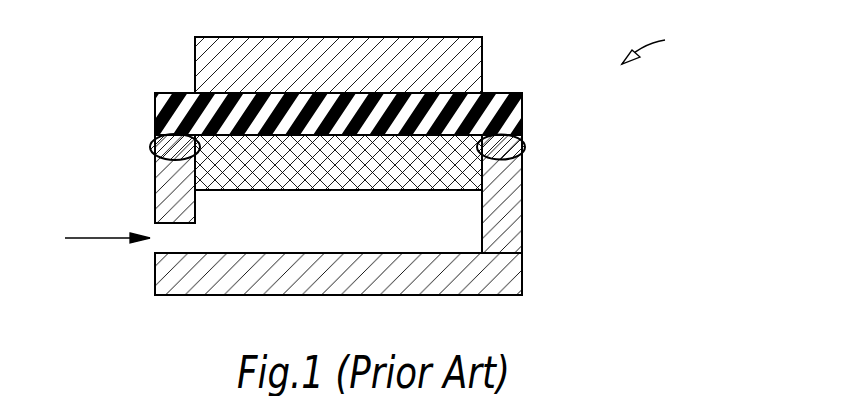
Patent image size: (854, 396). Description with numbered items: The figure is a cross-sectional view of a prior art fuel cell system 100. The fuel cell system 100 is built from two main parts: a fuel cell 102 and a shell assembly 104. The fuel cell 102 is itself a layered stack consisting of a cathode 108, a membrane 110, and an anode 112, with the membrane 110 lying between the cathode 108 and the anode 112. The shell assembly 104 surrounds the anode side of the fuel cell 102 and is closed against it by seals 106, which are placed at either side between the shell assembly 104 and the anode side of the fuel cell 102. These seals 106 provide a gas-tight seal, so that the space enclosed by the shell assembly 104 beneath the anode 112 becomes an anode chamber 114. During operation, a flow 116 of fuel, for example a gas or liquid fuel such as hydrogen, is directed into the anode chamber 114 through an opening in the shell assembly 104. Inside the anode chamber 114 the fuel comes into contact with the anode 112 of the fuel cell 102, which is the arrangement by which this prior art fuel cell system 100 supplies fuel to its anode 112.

The fuel cell system 100 is at (660, 44).
The fuel cell 102 is at (153, 113).
The shell assembly 104 is at (522, 200).
The seals 106 is at (150, 147).
The cathode 108 is at (482, 62).
The membrane 110 is at (522, 112).
The anode 112 is at (413, 178).
The anode chamber 114 is at (333, 235).
The flow of fuel 116 is at (100, 235).